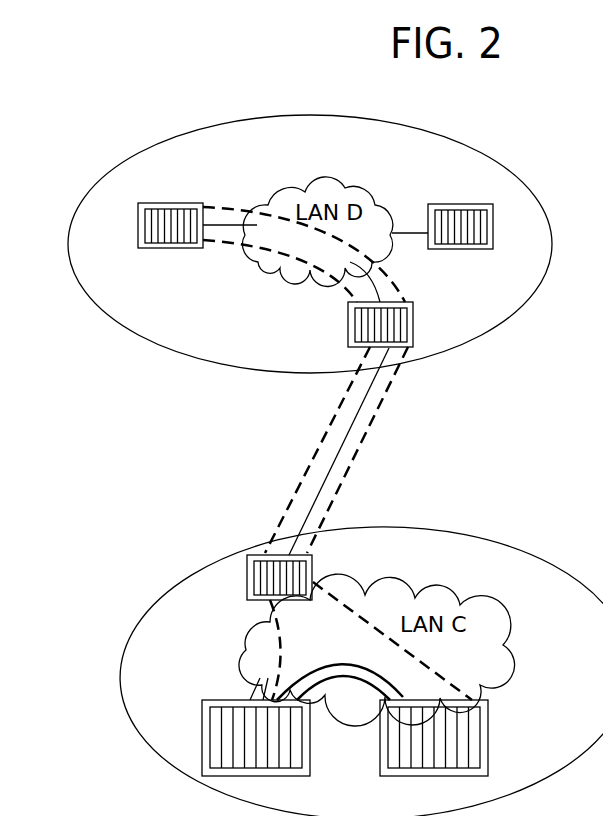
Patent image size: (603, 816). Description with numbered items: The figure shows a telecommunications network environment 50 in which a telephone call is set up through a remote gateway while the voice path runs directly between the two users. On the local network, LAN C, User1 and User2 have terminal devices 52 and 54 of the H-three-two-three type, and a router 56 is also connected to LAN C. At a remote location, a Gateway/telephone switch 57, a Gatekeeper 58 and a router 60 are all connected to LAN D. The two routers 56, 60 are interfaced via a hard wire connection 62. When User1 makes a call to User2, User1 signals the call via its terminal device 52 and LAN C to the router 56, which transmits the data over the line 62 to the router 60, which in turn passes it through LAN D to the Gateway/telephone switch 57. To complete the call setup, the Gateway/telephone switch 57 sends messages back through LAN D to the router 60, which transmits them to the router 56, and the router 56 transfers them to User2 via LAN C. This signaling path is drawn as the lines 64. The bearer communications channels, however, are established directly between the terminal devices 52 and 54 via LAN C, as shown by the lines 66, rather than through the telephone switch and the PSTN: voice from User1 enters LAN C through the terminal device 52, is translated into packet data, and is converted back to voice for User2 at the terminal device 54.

The network system 50 is at (117, 138).
The H.323 terminal device 52 is at (218, 700).
The H.323 terminal device 54 is at (488, 728).
The router 56 is at (313, 570).
The Gateway/telephone switch 57 is at (173, 252).
The Gatekeeper 58 is at (470, 200).
The router 60 is at (348, 333).
The hard wire connection 62 is at (360, 408).
The signaling path lines 64 is at (352, 462).
The bearer communications channel lines 66 is at (365, 683).